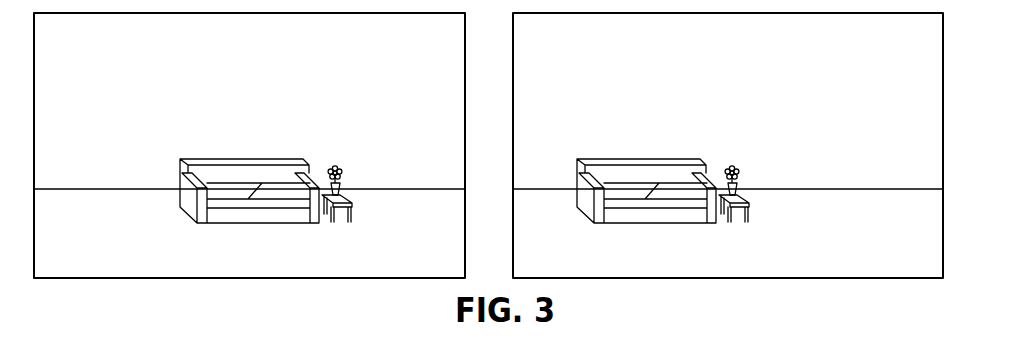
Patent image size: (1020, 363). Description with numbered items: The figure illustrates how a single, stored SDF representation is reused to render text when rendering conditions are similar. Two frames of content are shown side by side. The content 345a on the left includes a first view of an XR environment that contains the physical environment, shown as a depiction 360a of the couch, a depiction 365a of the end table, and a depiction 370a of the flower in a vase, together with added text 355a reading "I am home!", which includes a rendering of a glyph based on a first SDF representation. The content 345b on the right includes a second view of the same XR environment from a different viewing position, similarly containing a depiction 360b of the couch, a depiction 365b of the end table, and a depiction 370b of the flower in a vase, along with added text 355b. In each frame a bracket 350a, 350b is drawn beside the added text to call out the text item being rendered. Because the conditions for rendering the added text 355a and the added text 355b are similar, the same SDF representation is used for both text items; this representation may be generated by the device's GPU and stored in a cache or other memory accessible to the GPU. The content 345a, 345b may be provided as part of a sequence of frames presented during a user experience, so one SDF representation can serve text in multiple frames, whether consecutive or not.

The content 345a is at (102, 42).
The content 345b is at (581, 42).
The text caption region (first image) 350a is at (265, 102).
The text caption region (second image) 350b is at (662, 103).
The added text 355a is at (168, 100).
The added text 355b is at (567, 101).
The depiction of the couch 360a is at (180, 167).
The depiction of the couch 360b is at (577, 164).
The depiction of the end table 365a is at (349, 222).
The depiction of the end table 365b is at (746, 222).
The depiction of the flower in a vase 370a is at (341, 175).
The depiction of the flower in a vase 370b is at (738, 175).